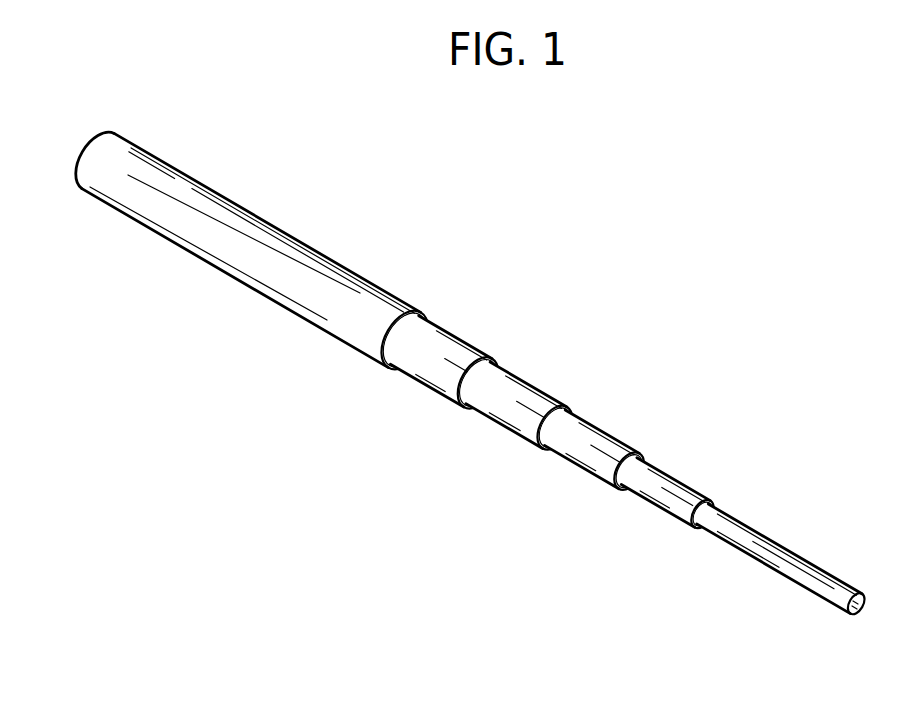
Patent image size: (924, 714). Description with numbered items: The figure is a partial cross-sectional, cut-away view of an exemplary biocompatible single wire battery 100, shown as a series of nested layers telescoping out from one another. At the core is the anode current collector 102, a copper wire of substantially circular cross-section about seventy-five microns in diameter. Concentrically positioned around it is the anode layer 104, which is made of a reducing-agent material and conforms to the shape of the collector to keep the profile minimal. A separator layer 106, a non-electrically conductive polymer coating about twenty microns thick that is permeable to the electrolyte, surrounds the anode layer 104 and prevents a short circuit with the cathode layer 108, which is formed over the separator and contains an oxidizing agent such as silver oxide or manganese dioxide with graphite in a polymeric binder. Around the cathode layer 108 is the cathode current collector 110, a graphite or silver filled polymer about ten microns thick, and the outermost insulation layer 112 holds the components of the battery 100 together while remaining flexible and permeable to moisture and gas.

The wire battery 100 is at (895, 533).
The anode current collector 102 is at (763, 552).
The anode layer 104 is at (648, 491).
The separator layer 106 is at (575, 451).
The cathode layer 108 is at (505, 414).
The cathode current collector 110 is at (442, 380).
The insulation layer 112 is at (325, 320).